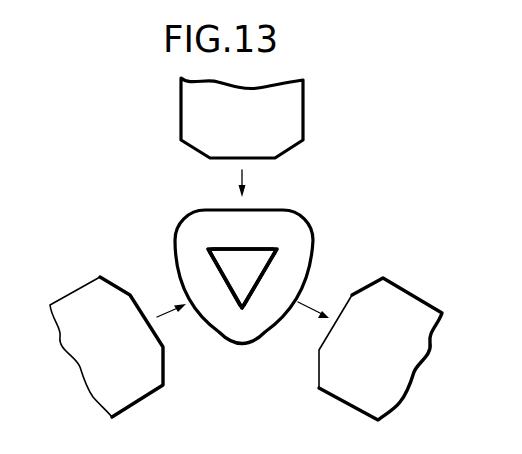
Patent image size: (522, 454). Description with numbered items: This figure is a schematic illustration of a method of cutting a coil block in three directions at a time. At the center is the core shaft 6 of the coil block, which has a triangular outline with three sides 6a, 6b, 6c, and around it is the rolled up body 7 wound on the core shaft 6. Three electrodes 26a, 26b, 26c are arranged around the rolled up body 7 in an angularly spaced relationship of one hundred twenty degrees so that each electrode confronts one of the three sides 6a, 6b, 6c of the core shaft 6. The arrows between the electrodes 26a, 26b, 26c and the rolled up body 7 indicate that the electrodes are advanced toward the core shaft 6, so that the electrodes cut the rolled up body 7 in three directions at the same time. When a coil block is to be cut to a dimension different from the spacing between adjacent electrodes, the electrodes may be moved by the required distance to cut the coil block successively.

The core shaft 6 is at (212, 256).
The side of the core shaft 6a is at (257, 247).
The side of the core shaft 6b is at (265, 278).
The side of the core shaft 6c is at (228, 297).
The rolled up body 7 is at (292, 243).
The electrode 26a is at (296, 122).
The electrode 26b is at (345, 387).
The electrode 26c is at (142, 380).